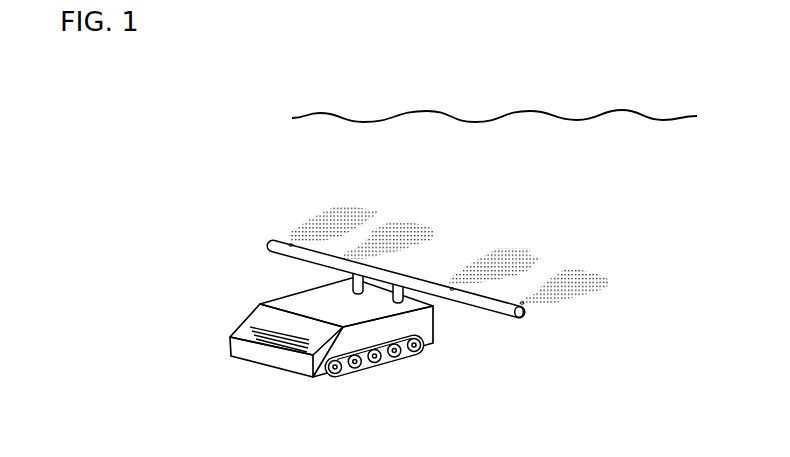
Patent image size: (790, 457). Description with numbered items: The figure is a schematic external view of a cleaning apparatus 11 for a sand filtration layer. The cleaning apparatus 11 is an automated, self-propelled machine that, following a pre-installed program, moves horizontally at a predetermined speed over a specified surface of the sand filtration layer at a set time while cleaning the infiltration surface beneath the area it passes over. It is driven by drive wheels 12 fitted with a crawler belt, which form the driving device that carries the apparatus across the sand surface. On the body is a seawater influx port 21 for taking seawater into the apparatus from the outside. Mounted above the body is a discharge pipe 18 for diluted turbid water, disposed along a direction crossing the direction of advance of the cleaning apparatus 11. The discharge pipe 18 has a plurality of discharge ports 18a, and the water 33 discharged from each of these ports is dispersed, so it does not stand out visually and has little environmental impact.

The cleaning apparatus 11 is at (328, 359).
The drive wheels 12 is at (401, 366).
The seawater influx port 21 is at (270, 331).
The discharge pipe for diluted turbid water 18 is at (484, 310).
The discharge ports 18a is at (291, 244).
The water 33 is at (347, 213).